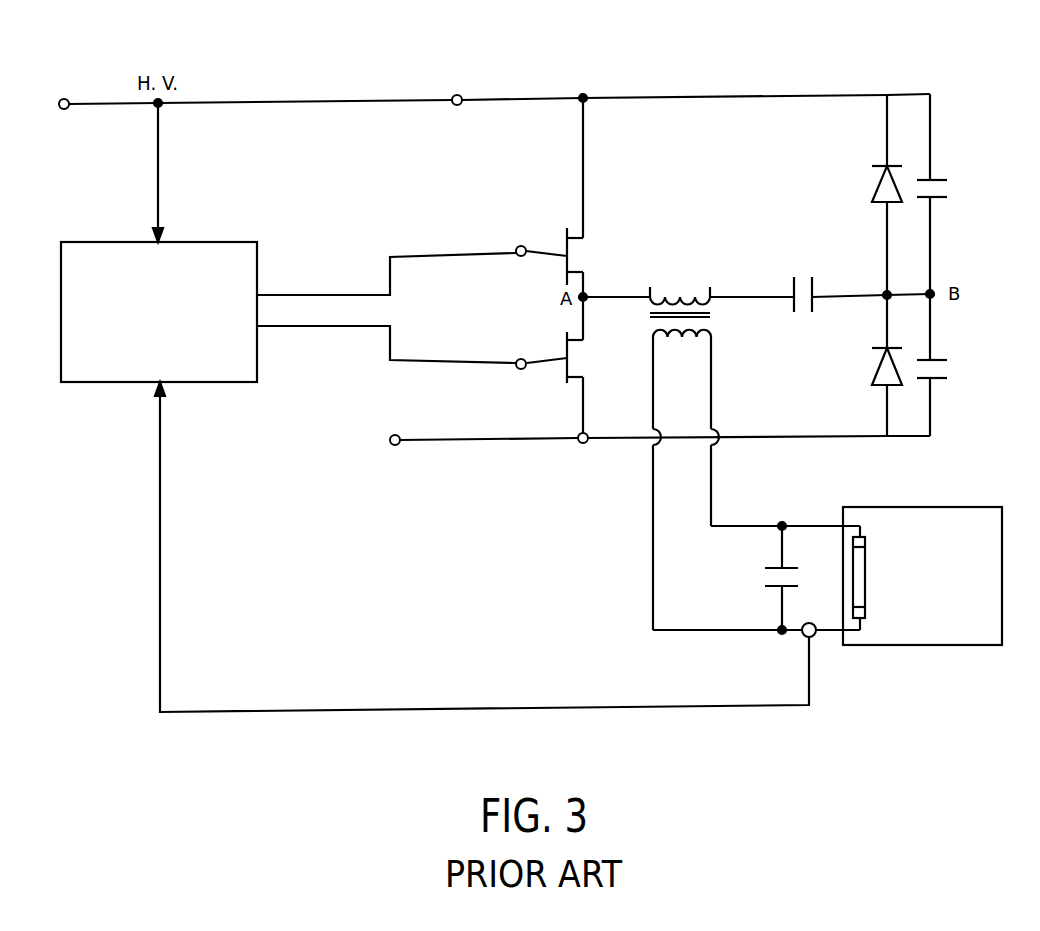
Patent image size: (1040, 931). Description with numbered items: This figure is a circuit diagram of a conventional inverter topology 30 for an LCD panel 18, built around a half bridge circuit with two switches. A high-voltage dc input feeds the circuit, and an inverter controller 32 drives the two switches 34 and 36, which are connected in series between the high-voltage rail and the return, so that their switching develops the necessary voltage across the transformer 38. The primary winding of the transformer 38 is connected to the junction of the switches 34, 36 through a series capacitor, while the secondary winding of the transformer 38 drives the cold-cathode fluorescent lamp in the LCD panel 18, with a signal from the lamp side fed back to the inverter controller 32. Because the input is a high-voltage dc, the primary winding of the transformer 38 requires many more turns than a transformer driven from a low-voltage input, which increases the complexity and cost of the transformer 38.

The inverter topology 30 is at (379, 56).
The inverter controller 32 is at (218, 242).
The switch 34 is at (582, 256).
The switch 36 is at (580, 358).
The transformer 38 is at (673, 292).
The LCD panel 18 is at (940, 507).